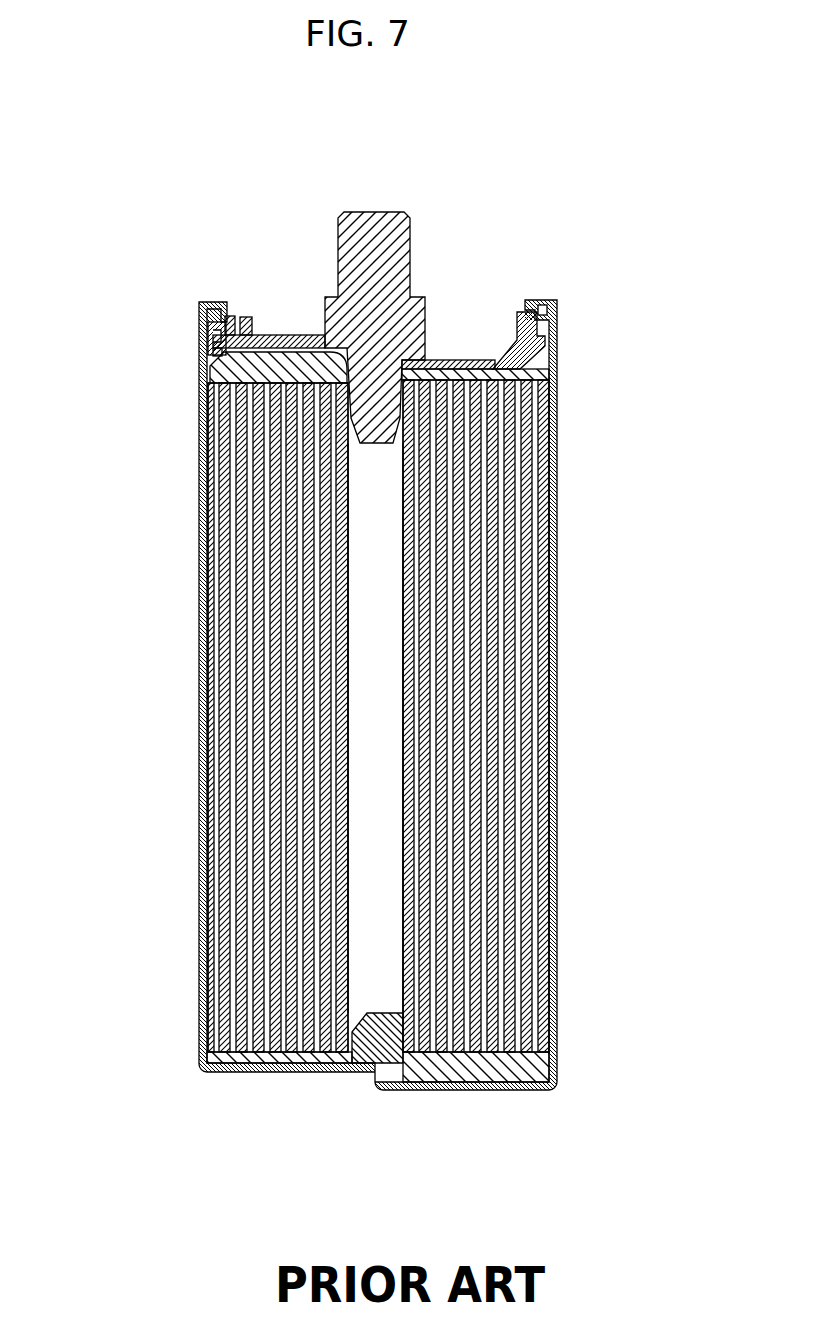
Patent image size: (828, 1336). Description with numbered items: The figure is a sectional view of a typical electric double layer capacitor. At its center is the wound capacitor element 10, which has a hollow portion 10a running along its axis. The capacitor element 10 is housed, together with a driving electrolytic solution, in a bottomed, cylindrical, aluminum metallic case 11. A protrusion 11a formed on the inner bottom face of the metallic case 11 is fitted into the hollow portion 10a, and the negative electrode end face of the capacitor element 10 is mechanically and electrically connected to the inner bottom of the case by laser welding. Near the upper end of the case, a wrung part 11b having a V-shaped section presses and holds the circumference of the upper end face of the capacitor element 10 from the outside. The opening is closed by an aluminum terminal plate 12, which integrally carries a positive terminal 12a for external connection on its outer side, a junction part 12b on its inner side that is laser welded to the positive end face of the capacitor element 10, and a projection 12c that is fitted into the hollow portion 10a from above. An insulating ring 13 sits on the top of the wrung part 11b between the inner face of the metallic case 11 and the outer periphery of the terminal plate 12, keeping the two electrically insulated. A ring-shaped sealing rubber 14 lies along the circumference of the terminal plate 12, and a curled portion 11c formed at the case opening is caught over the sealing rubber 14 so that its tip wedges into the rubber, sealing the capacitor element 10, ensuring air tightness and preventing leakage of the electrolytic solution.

The capacitor element 10 is at (547, 655).
The hollow portion 10a is at (375, 728).
The metallic case 11 is at (558, 869).
The protrusion 11a is at (390, 1082).
The wrung part 11b is at (202, 362).
The curled portion 11c is at (540, 305).
The terminal plate 12 is at (325, 303).
The positive terminal 12a is at (390, 225).
The junction part 12b is at (438, 377).
The projection 12c is at (357, 407).
The insulating ring 13 is at (540, 347).
The sealing rubber 14 is at (230, 318).